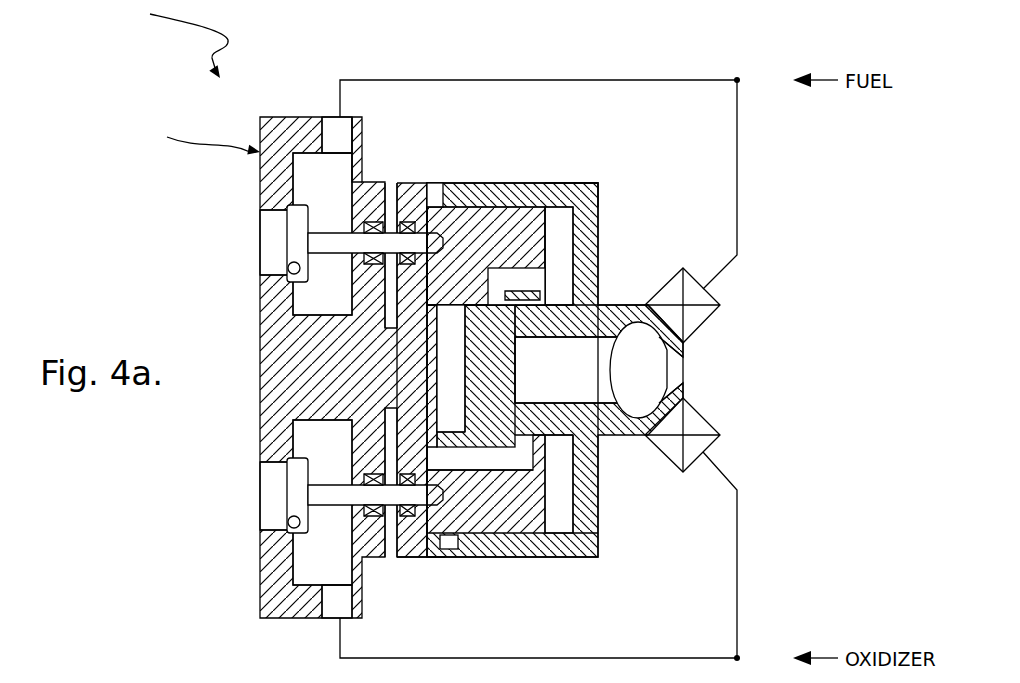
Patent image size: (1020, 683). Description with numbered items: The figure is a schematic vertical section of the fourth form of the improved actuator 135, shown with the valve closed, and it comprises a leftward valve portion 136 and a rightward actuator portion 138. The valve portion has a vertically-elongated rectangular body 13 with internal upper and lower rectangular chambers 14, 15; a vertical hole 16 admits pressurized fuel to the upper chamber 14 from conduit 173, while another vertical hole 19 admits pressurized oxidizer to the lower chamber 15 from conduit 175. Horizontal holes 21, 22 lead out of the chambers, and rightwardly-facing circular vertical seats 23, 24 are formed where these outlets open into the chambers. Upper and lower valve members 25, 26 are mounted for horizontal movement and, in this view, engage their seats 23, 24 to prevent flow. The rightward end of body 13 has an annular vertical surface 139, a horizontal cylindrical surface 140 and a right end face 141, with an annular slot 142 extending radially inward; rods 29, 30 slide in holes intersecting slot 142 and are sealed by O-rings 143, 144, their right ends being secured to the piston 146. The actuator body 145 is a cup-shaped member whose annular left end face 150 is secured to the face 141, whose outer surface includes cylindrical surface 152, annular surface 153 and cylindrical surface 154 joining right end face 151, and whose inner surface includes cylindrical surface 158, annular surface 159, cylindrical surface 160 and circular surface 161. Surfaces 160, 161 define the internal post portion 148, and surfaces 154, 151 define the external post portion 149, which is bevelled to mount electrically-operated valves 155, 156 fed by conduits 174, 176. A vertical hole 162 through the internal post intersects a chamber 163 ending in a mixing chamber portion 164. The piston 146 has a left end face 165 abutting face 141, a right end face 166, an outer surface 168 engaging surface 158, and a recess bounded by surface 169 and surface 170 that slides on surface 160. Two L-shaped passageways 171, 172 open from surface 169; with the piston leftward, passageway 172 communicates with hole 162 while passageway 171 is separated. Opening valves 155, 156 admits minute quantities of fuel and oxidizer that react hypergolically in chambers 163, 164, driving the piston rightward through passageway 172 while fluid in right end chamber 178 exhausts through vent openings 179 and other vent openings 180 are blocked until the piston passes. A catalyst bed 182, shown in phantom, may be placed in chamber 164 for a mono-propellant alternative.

The body 13 is at (266, 346).
The upper rectangular chamber 14 is at (333, 194).
The lower rectangular chamber 15 is at (328, 454).
The vertical hole 16 is at (344, 120).
The vertical hole 19 is at (350, 618).
The horizontal hole 21 is at (290, 218).
The horizontal hole 22 is at (290, 468).
The circular vertical seat 23 is at (290, 264).
The circular vertical seat 24 is at (290, 514).
The upper valve member 25 is at (290, 241).
The lower valve member 26 is at (290, 491).
The actuator rod 29 is at (326, 237).
The actuator rod 30 is at (330, 500).
The actuator 135 is at (170, 42).
The valve portion 136 is at (193, 142).
The actuator portion 138 is at (530, 175).
The annular vertical surface 139 is at (365, 132).
The horizontal cylindrical surface 140 is at (417, 183).
The right end face 141 is at (419, 285).
The annular slot 142 is at (391, 183).
The O-ring 143 is at (365, 262).
The O-ring 144 is at (415, 262).
The actuator body 145 is at (590, 192).
The piston 146 is at (527, 247).
The internal axial post portion 148 is at (470, 370).
The external axial post portion 149 is at (688, 355).
The left end face 150 is at (422, 557).
The right end face 151 is at (690, 382).
The horizontal cylindrical surface 152 is at (501, 183).
The annular vertical surface 153 is at (598, 212).
The horizontal cylindrical surface 154 is at (632, 300).
The electrically-operated valve 155 is at (705, 292).
The electrically-operated valve 156 is at (705, 445).
The horizontal cylindrical surface 158 is at (441, 243).
The annular vertical surface 159 is at (565, 238).
The horizontal cylindrical surface 160 is at (560, 305).
The vertical circular surface 161 is at (439, 397).
The vertical hole 162 is at (525, 412).
The chamber 163 is at (587, 362).
The mixing chamber portion 164 is at (657, 362).
The left end face 165 is at (437, 350).
The right end face 166 is at (570, 468).
The horizontal cylindrical surface 168 is at (502, 558).
The horizontal cylindrical surface 169 is at (469, 308).
The vertical circular surface 170 is at (440, 405).
The first L-shaped passageway 171 is at (537, 292).
The second L-shaped passageway 172 is at (515, 468).
The conduit 173 is at (592, 78).
The conduit 174 is at (737, 140).
The conduit 175 is at (568, 632).
The conduit 176 is at (737, 565).
The piston right end chamber 178 is at (573, 498).
The vent openings 179 is at (560, 183).
The vent openings 180 is at (440, 190).
The catalyst bed 182 is at (613, 350).